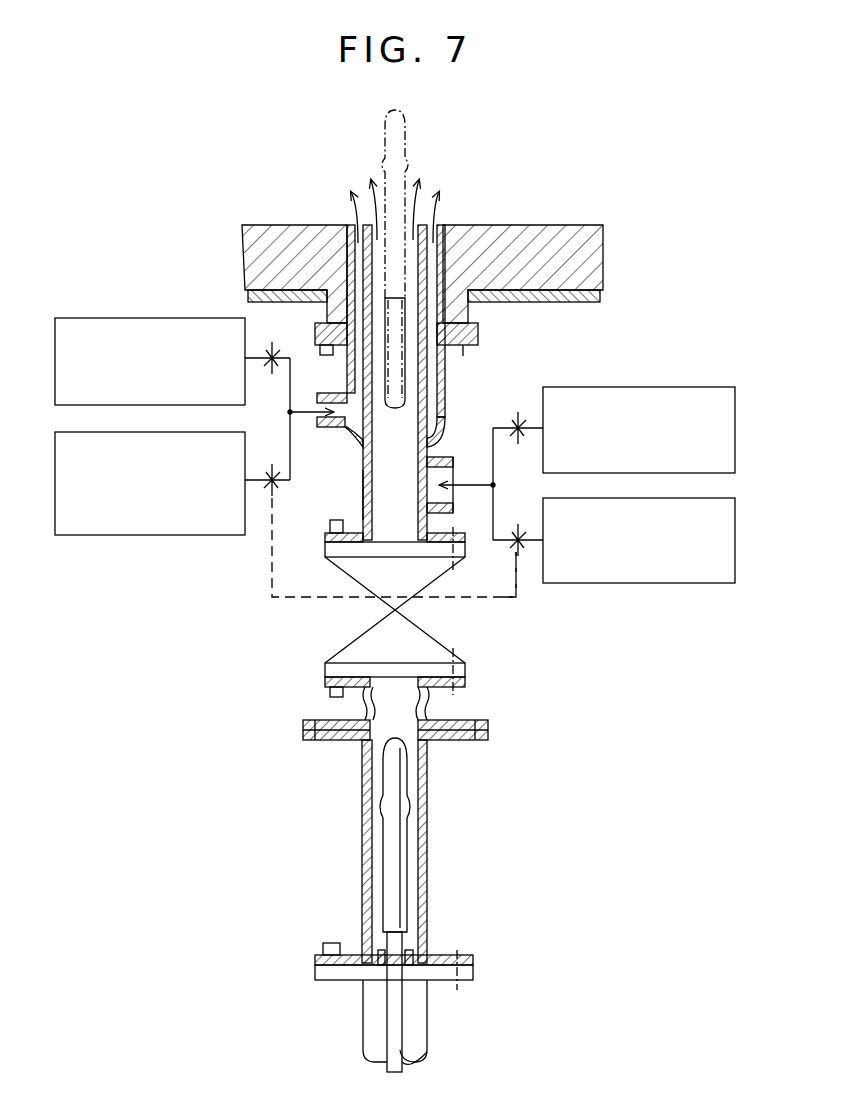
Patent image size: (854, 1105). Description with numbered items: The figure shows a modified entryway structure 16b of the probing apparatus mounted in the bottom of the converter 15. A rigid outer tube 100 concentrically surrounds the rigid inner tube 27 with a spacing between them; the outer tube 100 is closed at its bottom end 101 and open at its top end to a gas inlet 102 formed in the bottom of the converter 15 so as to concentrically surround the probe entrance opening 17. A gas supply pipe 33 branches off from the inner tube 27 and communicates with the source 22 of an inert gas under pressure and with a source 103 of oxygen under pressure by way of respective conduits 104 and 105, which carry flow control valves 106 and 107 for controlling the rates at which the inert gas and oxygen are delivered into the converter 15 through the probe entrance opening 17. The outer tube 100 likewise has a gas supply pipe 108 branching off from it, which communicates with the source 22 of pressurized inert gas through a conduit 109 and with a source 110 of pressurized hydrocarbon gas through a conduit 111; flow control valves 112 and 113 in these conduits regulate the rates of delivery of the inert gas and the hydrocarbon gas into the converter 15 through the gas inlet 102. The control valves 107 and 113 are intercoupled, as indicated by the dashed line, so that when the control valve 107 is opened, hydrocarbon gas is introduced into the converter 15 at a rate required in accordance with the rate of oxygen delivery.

The converter 15 is at (560, 225).
The probe entrance opening 17 is at (380, 172).
The gas inlet 102 is at (432, 226).
The outer tube 100 is at (350, 364).
The bottom end 101 is at (440, 432).
The gas supply pipe 108 is at (333, 428).
The inner tube 27 is at (431, 376).
The entryway structure 16b is at (357, 494).
The gas supply pipe 33 is at (445, 512).
The source of inert gas under pressure 22 is at (135, 318).
The source of pressurized hydrocarbon gas 110 is at (130, 535).
The source of oxygen under pressure 103 is at (655, 583).
The conduit 109 is at (289, 419).
The flow control valve 112 is at (280, 352).
The flow control valve 113 is at (268, 468).
The conduit 111 is at (262, 502).
The conduit 104 is at (535, 432).
The flow control valve 106 is at (506, 422).
The flow control valve 107 is at (508, 536).
The conduit 105 is at (535, 545).